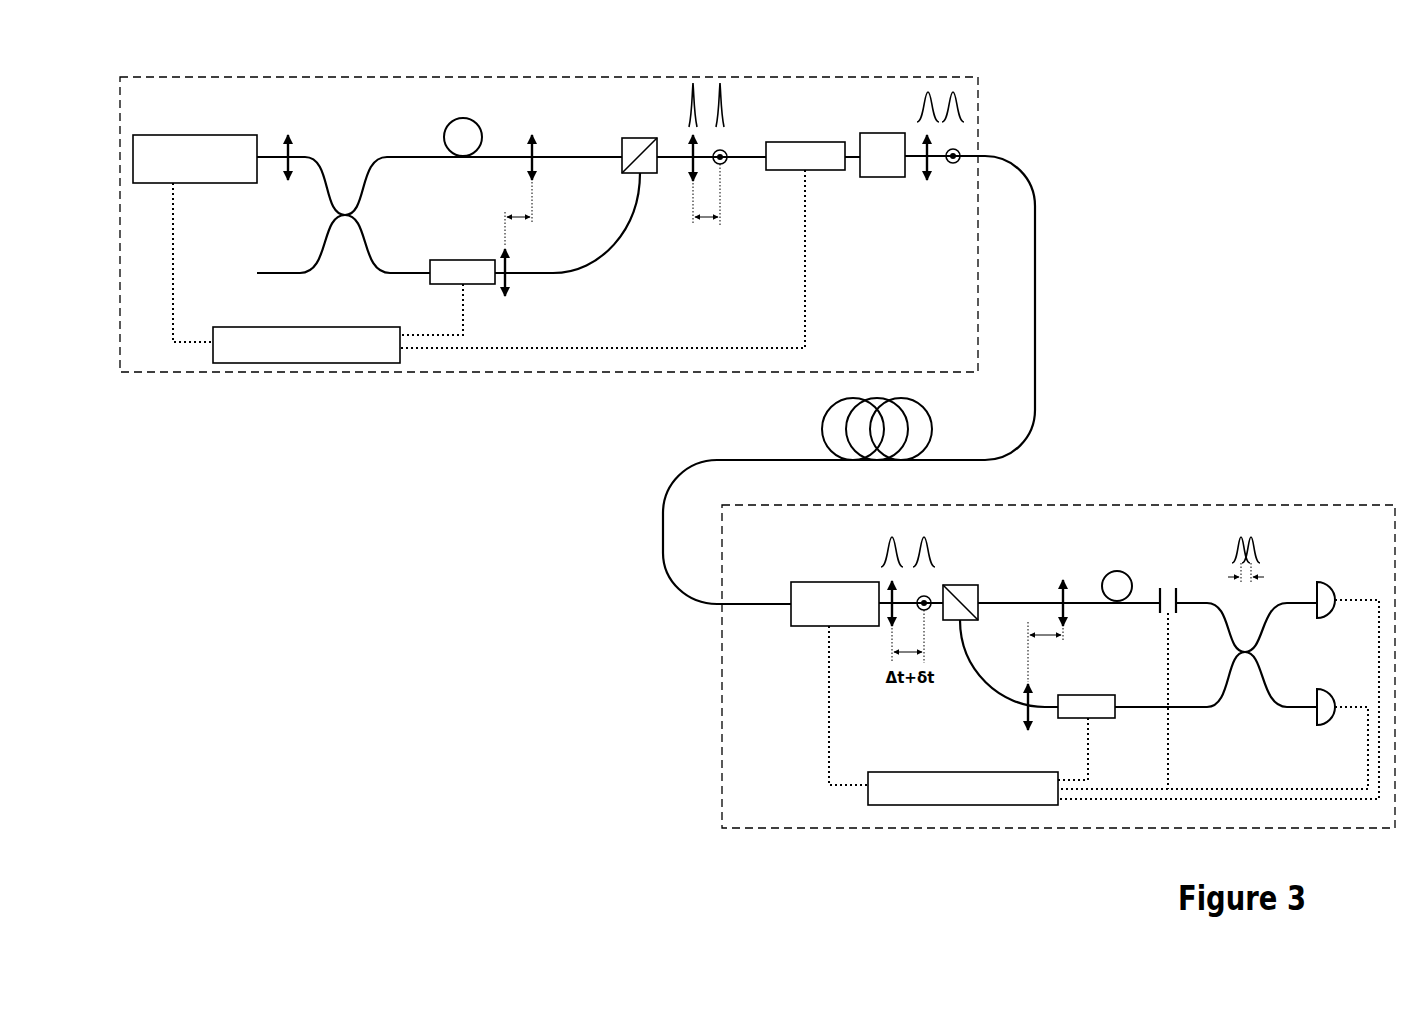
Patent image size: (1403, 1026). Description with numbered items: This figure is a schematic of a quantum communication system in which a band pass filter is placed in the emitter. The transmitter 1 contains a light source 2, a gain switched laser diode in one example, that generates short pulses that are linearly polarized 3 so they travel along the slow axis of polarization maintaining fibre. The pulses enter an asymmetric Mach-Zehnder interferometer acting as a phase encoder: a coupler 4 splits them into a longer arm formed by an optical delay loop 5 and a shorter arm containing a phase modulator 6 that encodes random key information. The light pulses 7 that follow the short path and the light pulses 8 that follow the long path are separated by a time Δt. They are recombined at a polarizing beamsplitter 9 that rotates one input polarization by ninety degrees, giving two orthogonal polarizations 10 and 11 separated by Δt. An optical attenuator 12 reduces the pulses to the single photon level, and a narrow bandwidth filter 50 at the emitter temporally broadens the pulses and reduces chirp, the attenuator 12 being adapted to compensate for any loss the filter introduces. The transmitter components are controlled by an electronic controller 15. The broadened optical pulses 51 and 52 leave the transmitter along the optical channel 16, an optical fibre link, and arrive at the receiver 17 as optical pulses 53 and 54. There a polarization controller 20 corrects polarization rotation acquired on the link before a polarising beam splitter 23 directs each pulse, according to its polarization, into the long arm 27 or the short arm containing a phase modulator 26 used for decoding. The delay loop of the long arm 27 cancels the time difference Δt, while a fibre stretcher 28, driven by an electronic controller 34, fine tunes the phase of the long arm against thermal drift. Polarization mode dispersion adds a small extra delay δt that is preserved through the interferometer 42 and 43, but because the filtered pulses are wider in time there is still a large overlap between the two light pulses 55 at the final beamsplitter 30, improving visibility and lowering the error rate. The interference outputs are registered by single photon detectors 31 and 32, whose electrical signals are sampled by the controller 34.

The transmitter 1 is at (432, 389).
The light source 2 is at (194, 117).
The linear polarization 3 is at (291, 117).
The coupler 4 is at (348, 263).
The optical delay loop 5 is at (459, 109).
The phase modulator 6 is at (479, 299).
The light pulses following the short path 7 is at (504, 204).
The light pulses following the long path 8 is at (532, 121).
The polarizing beamsplitter 9 is at (641, 127).
The first orthogonal polarization pulse 10 is at (694, 70).
The second orthogonal polarization pulse 11 is at (724, 52).
The optical attenuator 12 is at (805, 130).
The electronic controller 15 is at (266, 315).
The optical channel 16 is at (955, 473).
The receiver 17 is at (1036, 839).
The polarization controller 20 is at (828, 570).
The polarising beam splitter 23 is at (977, 632).
The phase modulator 26 is at (1100, 731).
The long arm 27 is at (1114, 560).
The fibre stretcher 28 is at (1166, 554).
The final beamsplitter 30 is at (1260, 731).
The single photon detector 31 is at (1325, 570).
The single photon detector 32 is at (1324, 737).
The electronic controller 34 is at (956, 757).
The pulse with preserved time difference δt 42 is at (1032, 743).
The pulse with preserved time difference δt 43 is at (1060, 570).
The narrow bandwidth filter 50 is at (883, 124).
The temporally broadened optical pulse 51 is at (923, 67).
The temporally broadened optical pulse 52 is at (955, 50).
The received broadened optical pulse 53 is at (889, 513).
The received broadened optical pulse 54 is at (927, 500).
The overlapping light pulses 55 is at (1236, 494).